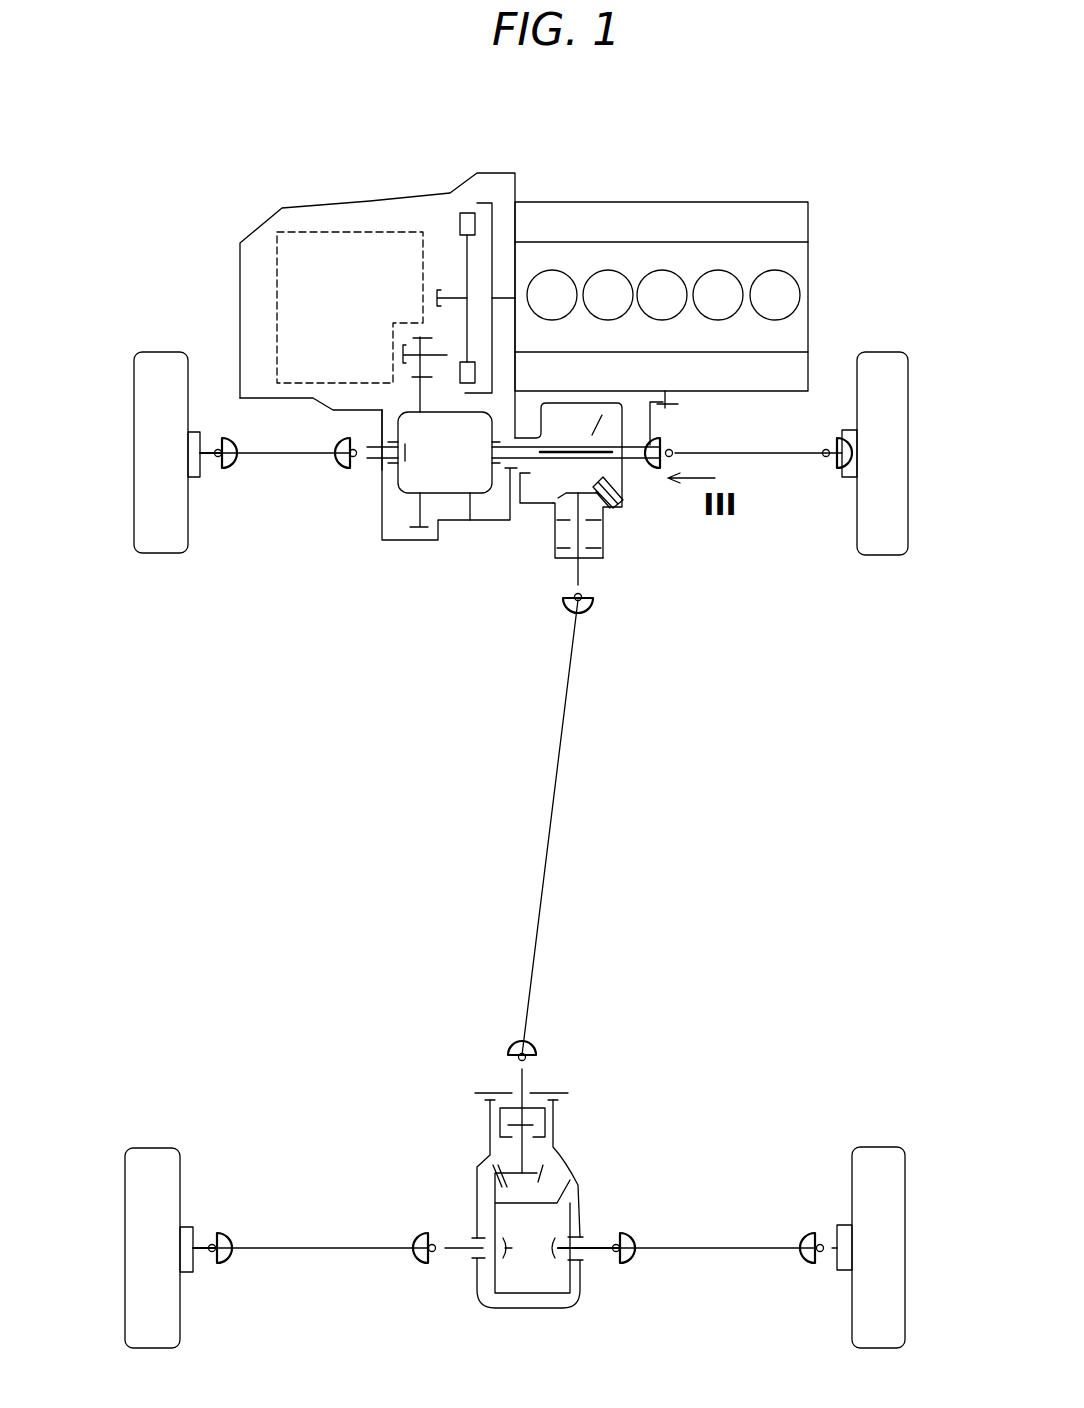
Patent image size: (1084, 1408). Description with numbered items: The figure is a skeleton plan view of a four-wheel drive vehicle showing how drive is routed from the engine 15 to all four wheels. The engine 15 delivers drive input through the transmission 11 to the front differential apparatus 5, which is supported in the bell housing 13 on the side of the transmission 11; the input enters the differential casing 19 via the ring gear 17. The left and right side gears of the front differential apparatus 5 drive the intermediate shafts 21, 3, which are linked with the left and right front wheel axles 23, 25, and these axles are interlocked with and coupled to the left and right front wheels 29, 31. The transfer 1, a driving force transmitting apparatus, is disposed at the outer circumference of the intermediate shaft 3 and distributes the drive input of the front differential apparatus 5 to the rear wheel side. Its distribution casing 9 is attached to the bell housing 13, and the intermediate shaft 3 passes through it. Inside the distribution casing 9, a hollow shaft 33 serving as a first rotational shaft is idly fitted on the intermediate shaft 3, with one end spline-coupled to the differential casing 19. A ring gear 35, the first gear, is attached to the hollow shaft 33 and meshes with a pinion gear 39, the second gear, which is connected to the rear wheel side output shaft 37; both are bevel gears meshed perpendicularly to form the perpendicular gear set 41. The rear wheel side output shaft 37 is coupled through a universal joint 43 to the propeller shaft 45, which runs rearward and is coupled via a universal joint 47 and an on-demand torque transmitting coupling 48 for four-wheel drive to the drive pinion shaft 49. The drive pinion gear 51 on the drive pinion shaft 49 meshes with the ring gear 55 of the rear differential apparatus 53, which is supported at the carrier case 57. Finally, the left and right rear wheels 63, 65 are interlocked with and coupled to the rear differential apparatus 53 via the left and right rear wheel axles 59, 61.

The transfer 1 is at (581, 393).
The intermediate shaft 3 is at (547, 458).
The front differential apparatus 5 is at (381, 518).
The distribution casing 9 is at (632, 490).
The transmission 11 is at (370, 192).
The bell housing 13 is at (394, 502).
The engine 15 is at (712, 195).
The ring gear 17 is at (426, 532).
The differential casing 19 is at (469, 522).
The intermediate shaft 21 is at (378, 478).
The front wheel axle 23 is at (273, 455).
The front wheel axle 25 is at (777, 456).
The front wheel 29 is at (160, 350).
The front wheel 31 is at (880, 350).
The hollow shaft 33 is at (588, 440).
The ring gear 35 is at (620, 492).
The rear wheel side output shaft 37 is at (578, 538).
The pinion gear 39 is at (598, 507).
The perpendicular gear set 41 is at (610, 497).
The universal joint 43 is at (597, 600).
The propeller shaft 45 is at (552, 830).
The universal joint 47 is at (538, 1063).
The on-demand torque transmitting coupling 48 is at (553, 1118).
The drive pinion shaft 49 is at (492, 1148).
The drive pinion gear 51 is at (543, 1172).
The rear differential apparatus 53 is at (561, 1198).
The ring gear 55 is at (493, 1190).
The carrier case 57 is at (553, 1148).
The rear wheel axle 59 is at (290, 1250).
The rear wheel axle 61 is at (715, 1250).
The rear wheel 63 is at (157, 1146).
The rear wheel 65 is at (882, 1146).